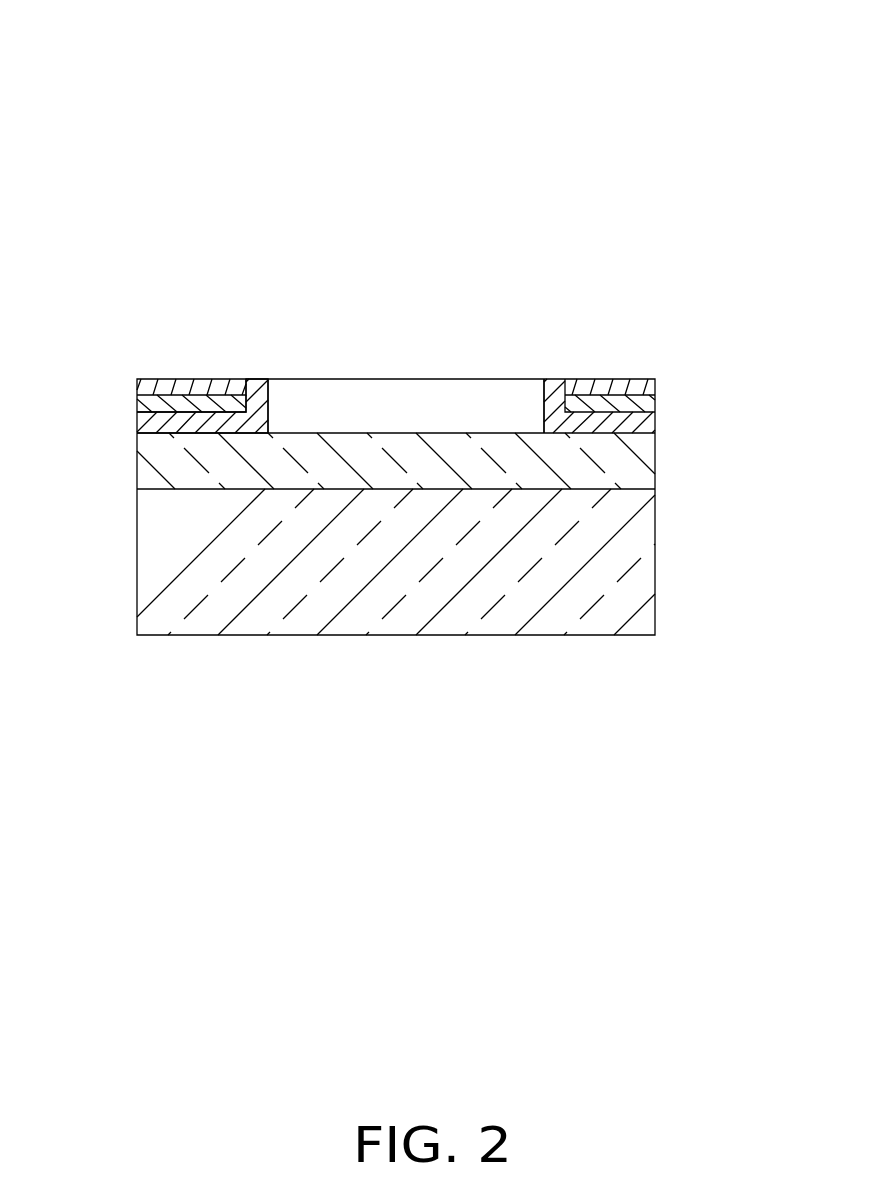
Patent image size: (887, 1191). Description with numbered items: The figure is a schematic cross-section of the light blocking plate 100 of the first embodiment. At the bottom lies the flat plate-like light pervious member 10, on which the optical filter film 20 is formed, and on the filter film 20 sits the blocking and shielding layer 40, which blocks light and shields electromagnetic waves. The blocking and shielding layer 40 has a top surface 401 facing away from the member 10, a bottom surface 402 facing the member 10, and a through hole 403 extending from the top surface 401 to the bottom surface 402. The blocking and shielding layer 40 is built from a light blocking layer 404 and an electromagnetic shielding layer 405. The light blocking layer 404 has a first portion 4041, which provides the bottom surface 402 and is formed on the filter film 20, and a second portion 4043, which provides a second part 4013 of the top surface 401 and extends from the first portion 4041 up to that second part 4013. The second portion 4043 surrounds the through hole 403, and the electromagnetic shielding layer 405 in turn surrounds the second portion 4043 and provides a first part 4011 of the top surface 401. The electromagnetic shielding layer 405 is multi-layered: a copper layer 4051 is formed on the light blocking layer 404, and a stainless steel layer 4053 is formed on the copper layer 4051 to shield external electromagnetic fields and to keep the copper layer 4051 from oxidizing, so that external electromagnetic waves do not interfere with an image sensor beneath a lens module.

The light blocking plate 100 is at (202, 83).
The light pervious member 10 is at (638, 525).
The optical filter film 20 is at (630, 475).
The blocking and shielding layer 40 is at (318, 252).
The top surface 401 is at (692, 256).
The first part of the top surface 4011 is at (626, 390).
The second part of the top surface 4013 is at (553, 392).
The bottom surface 402 is at (177, 437).
The through hole 403 is at (413, 400).
The light blocking layer 404 is at (247, 307).
The first portion of the light blocking layer 4041 is at (212, 425).
The second portion of the light blocking layer 4043 is at (225, 424).
The electromagnetic shielding layer 405 is at (88, 307).
The copper layer 4051 is at (237, 395).
The stainless steel layer 4053 is at (158, 390).